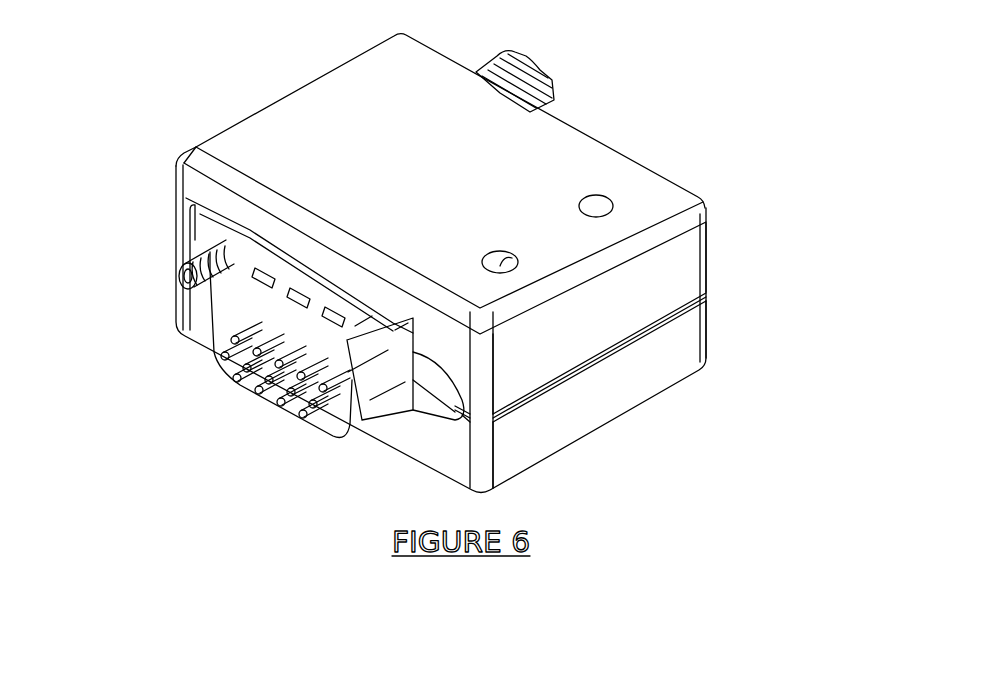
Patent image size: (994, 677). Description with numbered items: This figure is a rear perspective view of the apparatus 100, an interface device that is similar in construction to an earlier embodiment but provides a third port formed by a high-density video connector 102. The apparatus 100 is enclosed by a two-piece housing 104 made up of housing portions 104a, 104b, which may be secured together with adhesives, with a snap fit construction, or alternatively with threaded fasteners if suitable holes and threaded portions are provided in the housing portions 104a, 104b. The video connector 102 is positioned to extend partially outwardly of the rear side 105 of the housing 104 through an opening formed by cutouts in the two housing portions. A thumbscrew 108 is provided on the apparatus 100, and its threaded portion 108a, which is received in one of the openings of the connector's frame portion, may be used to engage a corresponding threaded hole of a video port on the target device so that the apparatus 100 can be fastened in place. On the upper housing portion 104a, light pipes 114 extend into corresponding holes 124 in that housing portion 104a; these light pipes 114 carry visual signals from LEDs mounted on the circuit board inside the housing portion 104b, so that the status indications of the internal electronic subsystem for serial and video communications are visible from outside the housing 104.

The apparatus 100 is at (190, 106).
The HD-15 video connector 102 is at (233, 355).
The two-piece housing 104 is at (674, 381).
The housing portion 104a is at (677, 287).
The housing portion 104b is at (563, 427).
The rear side 105 is at (193, 183).
The thumbscrew 108 is at (500, 62).
The threaded portion 108a is at (185, 274).
The light pipes 114 is at (515, 250).
The holes 124 is at (583, 197).